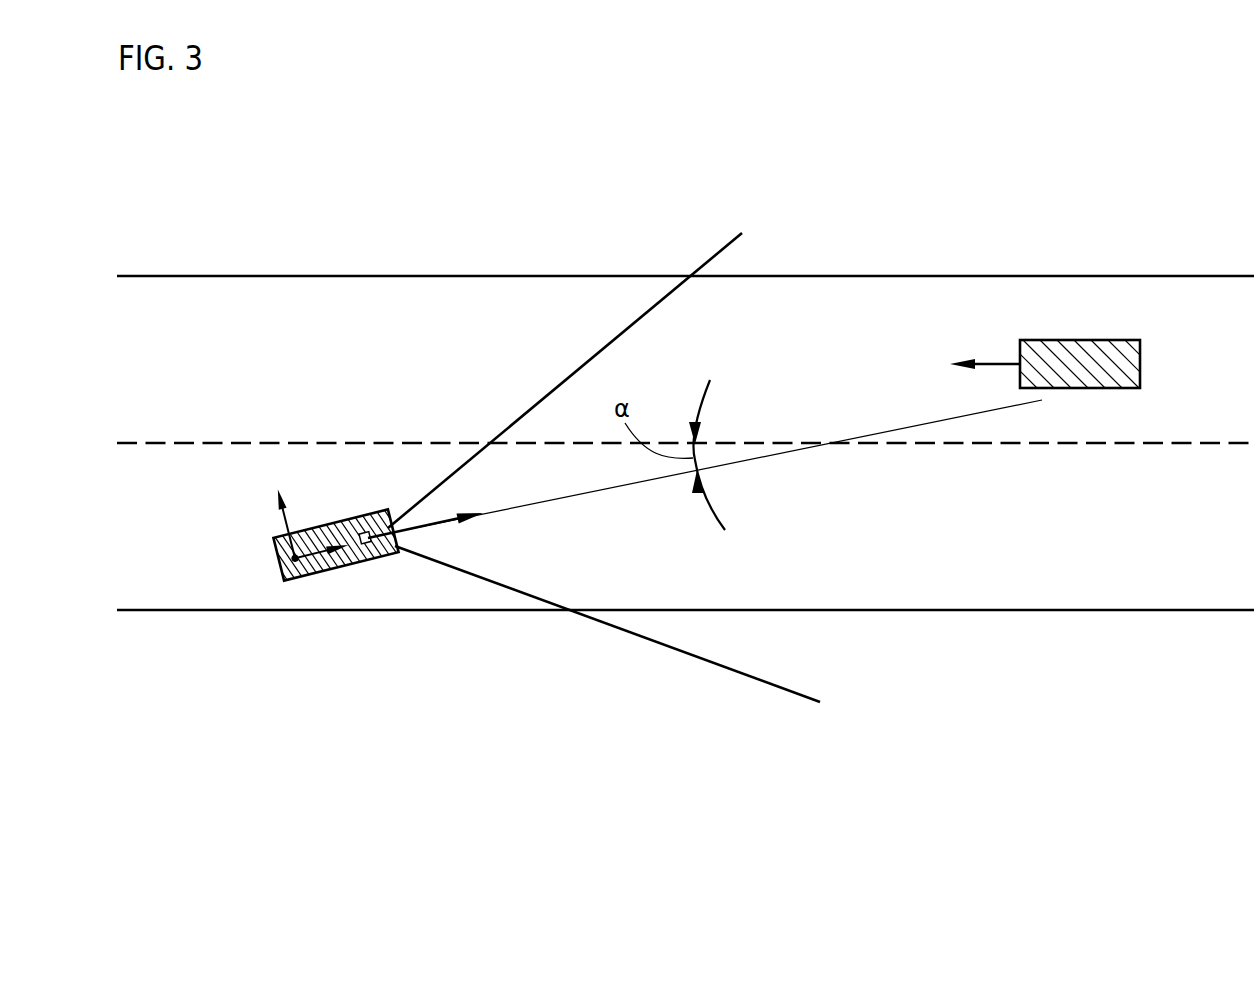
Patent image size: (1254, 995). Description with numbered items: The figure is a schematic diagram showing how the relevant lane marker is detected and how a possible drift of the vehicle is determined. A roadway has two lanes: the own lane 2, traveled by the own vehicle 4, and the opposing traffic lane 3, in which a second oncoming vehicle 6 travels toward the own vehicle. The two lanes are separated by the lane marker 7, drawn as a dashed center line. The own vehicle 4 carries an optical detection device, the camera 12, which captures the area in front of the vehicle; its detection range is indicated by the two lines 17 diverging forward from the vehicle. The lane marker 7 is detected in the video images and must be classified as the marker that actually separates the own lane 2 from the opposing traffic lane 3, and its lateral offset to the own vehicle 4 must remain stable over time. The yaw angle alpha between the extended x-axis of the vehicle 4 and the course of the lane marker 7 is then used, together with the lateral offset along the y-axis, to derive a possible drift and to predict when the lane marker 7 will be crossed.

The own lane 2 is at (235, 491).
The opposing traffic lane 3 is at (277, 318).
The own vehicle 4 is at (337, 579).
The second oncoming vehicle 6 is at (1068, 340).
The lane marker 7 is at (1057, 446).
The camera 12 is at (364, 532).
The lines 17 is at (552, 385).